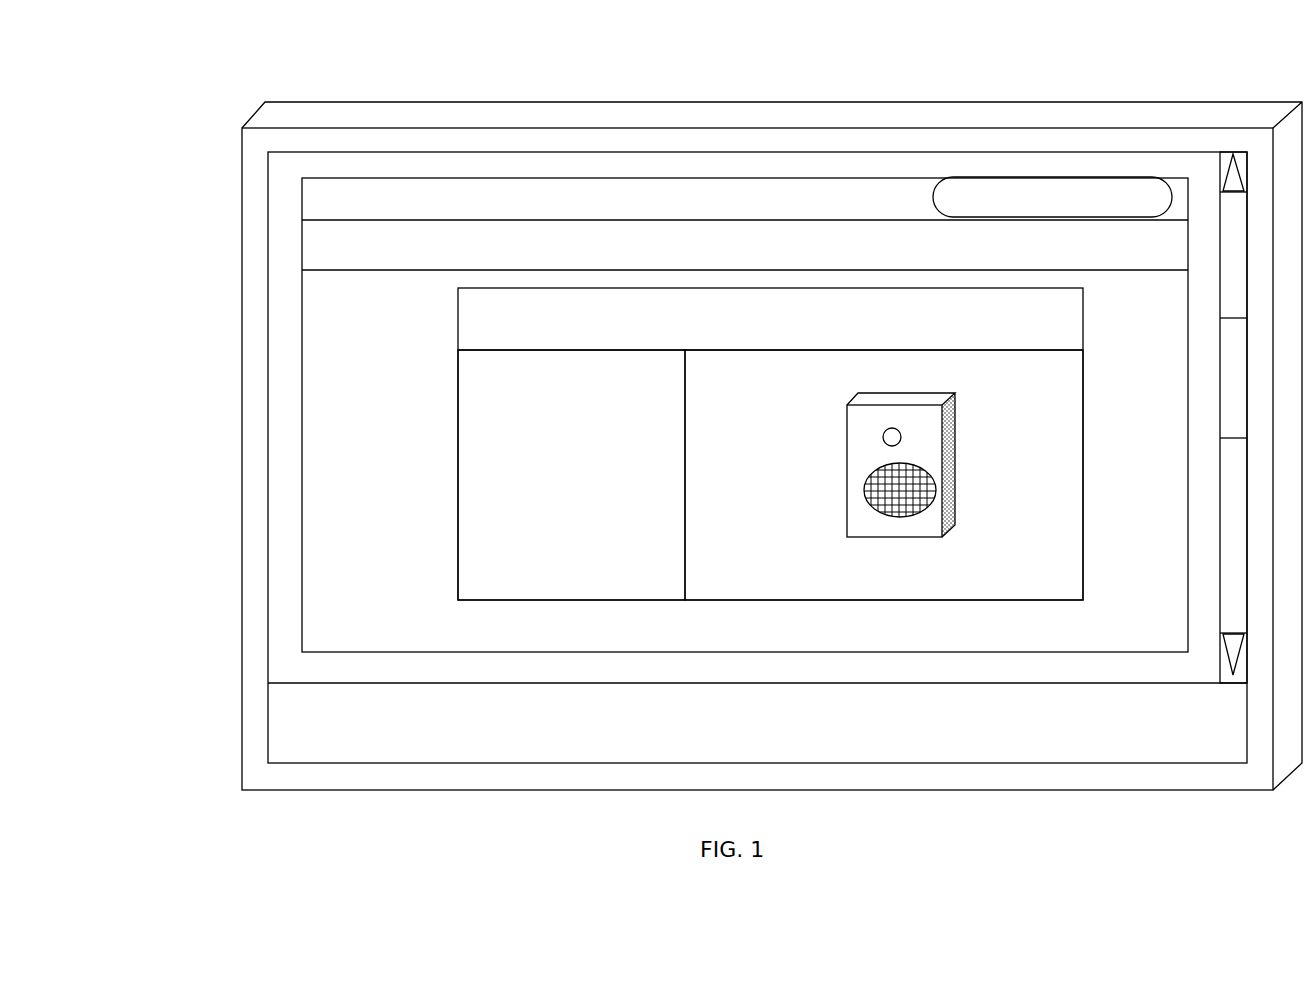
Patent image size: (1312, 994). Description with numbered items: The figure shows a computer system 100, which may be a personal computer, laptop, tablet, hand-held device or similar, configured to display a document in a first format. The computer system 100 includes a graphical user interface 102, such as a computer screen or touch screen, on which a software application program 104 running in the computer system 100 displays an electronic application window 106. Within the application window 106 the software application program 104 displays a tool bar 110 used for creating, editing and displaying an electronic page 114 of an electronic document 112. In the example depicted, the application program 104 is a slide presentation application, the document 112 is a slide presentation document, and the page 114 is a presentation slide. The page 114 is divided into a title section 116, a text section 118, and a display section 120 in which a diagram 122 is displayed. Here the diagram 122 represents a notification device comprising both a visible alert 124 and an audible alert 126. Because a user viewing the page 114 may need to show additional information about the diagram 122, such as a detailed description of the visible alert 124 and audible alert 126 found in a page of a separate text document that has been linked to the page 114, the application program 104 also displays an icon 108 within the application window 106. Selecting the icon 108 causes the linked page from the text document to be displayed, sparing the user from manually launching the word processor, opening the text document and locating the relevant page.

The computer system 100 is at (277, 100).
The graphical user interface 102 is at (372, 152).
The software application program 104 is at (193, 658).
The electronic application window 106 is at (485, 178).
The icon 108 is at (978, 177).
The tool bar 110 is at (302, 255).
The electronic document 112 is at (378, 366).
The electronic page 114 is at (458, 500).
The title section 116 is at (1083, 305).
The text section 118 is at (527, 600).
The display section 120 is at (1083, 475).
The diagram 122 is at (847, 522).
The visible alert 124 is at (882, 437).
The audible alert 126 is at (936, 487).